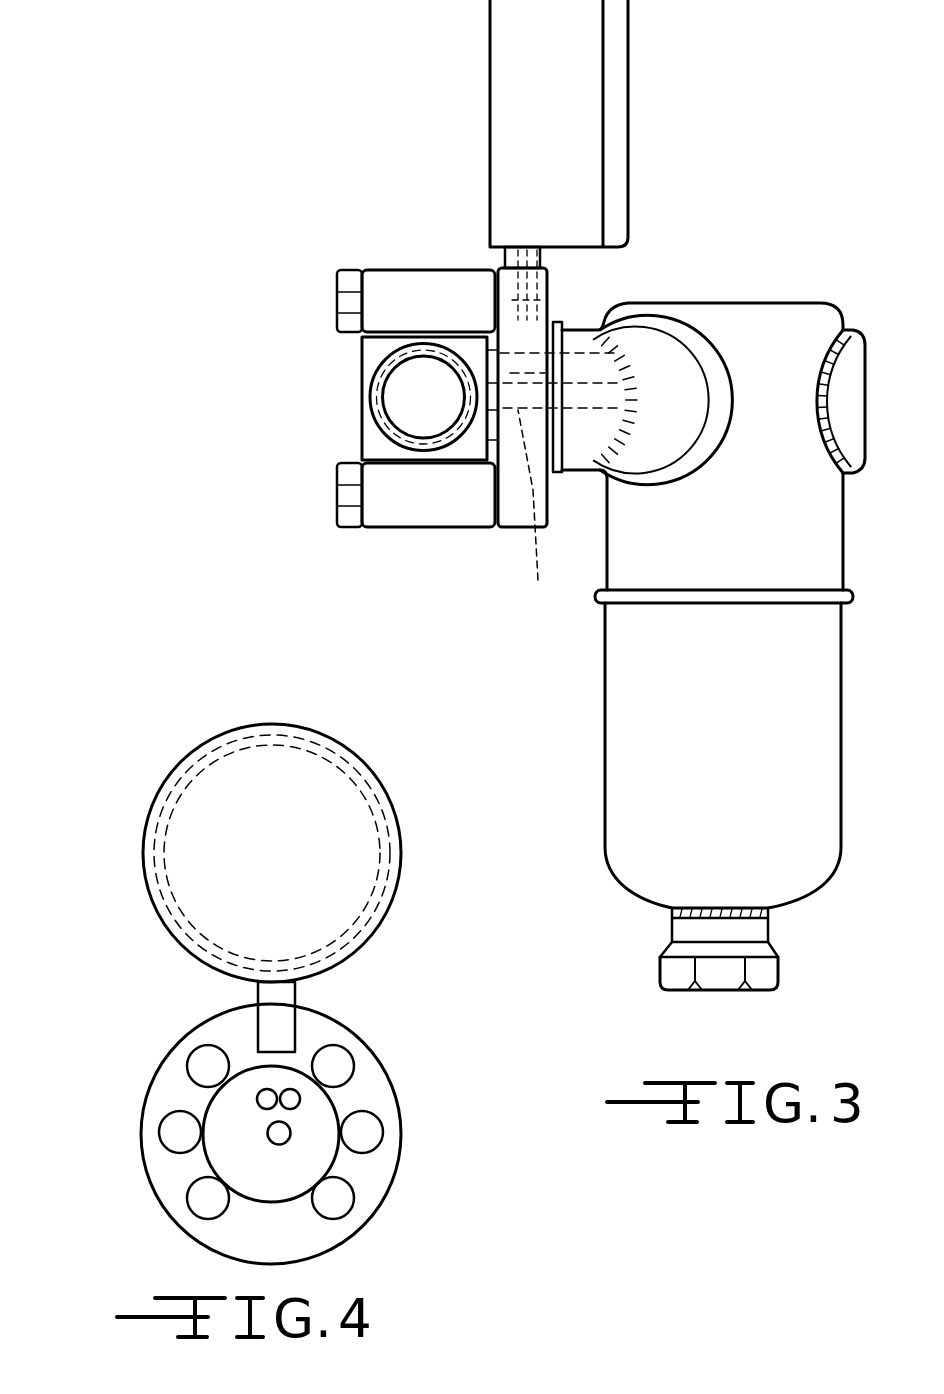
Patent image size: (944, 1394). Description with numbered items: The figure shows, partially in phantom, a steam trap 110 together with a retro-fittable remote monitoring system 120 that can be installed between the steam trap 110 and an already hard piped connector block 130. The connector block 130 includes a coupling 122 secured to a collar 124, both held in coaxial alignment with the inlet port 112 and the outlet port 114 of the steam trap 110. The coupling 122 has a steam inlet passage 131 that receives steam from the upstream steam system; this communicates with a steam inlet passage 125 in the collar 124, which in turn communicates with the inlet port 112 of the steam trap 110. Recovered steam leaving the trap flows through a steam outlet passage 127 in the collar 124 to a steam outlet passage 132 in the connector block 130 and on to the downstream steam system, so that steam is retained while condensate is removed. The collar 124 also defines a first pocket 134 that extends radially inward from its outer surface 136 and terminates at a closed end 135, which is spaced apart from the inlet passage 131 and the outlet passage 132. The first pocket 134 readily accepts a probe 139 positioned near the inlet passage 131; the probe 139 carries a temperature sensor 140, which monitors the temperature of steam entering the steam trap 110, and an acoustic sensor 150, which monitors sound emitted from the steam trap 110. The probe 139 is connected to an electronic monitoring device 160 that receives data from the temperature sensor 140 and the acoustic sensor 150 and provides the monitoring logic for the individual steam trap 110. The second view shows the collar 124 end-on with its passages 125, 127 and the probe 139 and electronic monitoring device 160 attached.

In FIG. 3, the steam trap 110 is at (597, 752).
In FIG. 3, the inlet port 112 is at (592, 420).
In FIG. 3, the outlet port 114 is at (618, 375).
In FIG. 3, the remote monitoring system 120 is at (346, 383).
In FIG. 3, the coupling 122 is at (428, 528).
In FIG. 3, the collar 124 is at (512, 528).
In FIG. 4, the collar 124 is at (238, 1108).
In FIG. 3, the steam inlet passage 125 is at (536, 511).
In FIG. 4, the steam inlet passage 125 is at (291, 1128).
In FIG. 3, the steam outlet passage 127 is at (492, 323).
In FIG. 4, the steam outlet passage 127 is at (283, 1108).
In FIG. 3, the connector block 130 is at (416, 258).
In FIG. 3, the steam inlet passage 131 is at (375, 436).
In FIG. 3, the steam outlet passage 132 is at (383, 392).
In FIG. 3, the first pocket 134 is at (558, 306).
In FIG. 3, the closed end 135 is at (627, 322).
In FIG. 4, the closed end 135 is at (290, 1056).
In FIG. 4, the outer surface 136 is at (320, 1013).
In FIG. 3, the probe 139 is at (548, 262).
In FIG. 4, the probe 139 is at (258, 988).
In FIG. 3, the temperature sensor 140 is at (543, 327).
In FIG. 3, the acoustic sensor 150 is at (553, 292).
In FIG. 3, the electronic monitoring device 160 is at (484, 66).
In FIG. 4, the electronic monitoring device 160 is at (150, 812).